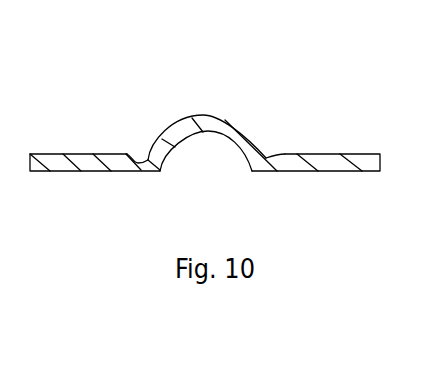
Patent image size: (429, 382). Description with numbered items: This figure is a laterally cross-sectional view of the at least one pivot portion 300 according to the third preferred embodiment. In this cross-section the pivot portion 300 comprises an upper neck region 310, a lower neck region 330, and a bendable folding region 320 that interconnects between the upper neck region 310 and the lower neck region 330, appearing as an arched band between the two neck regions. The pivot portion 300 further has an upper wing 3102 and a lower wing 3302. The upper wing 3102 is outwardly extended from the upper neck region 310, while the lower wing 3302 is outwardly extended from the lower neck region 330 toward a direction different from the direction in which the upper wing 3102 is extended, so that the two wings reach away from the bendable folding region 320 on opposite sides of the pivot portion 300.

The pivot portion 300 is at (272, 60).
The upper neck region 310 is at (268, 157).
The bendable folding region 320 is at (208, 114).
The lower neck region 330 is at (144, 153).
The upper wing 3102 is at (360, 153).
The lower wing 3302 is at (65, 153).